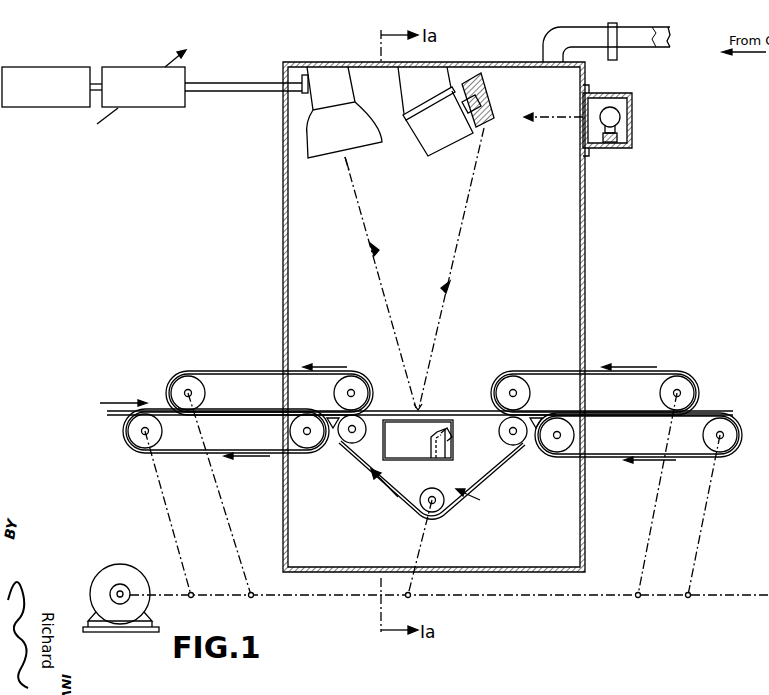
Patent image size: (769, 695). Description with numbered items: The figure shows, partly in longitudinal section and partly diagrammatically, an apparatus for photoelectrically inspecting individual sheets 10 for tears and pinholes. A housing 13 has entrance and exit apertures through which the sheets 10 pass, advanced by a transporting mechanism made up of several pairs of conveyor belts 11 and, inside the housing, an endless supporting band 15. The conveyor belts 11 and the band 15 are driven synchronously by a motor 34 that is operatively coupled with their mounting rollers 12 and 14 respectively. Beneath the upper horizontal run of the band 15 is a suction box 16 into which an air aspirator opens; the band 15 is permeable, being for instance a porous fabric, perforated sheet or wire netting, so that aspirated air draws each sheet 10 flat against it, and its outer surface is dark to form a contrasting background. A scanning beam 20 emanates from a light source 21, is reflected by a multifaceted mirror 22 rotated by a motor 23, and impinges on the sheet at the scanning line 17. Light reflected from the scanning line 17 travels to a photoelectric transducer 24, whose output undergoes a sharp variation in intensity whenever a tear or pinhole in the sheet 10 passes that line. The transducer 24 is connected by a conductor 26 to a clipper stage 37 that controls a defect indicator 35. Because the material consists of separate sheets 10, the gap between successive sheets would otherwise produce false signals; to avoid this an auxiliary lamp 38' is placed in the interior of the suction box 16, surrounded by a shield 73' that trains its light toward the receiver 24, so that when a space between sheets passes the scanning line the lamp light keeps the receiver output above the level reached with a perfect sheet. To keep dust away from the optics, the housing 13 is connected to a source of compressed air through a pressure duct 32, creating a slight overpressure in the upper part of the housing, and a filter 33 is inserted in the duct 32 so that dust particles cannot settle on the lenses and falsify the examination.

The sheets 10 is at (112, 409).
The conveyor belts 11 is at (247, 373).
The mounting rollers 12 is at (183, 378).
The housing 13 is at (588, 256).
The mounting rollers 14 is at (348, 436).
The supporting band 15 is at (479, 473).
The suction box 16 is at (437, 462).
The scanning line 17 is at (421, 407).
The scanning beam 20 is at (362, 218).
The light source 21 is at (620, 117).
The multifaceted mirror 22 is at (491, 97).
The motor 23 is at (435, 111).
The photoelectric transducer 24 is at (342, 118).
The conductor 26 is at (240, 86).
The pressure duct 32 is at (672, 40).
The filter 33 is at (617, 56).
The motor 34 is at (137, 577).
The defect indicator 35 is at (53, 106).
The clipper stage 37 is at (155, 106).
The auxiliary lamp 38' is at (464, 447).
The shield 73' is at (468, 436).